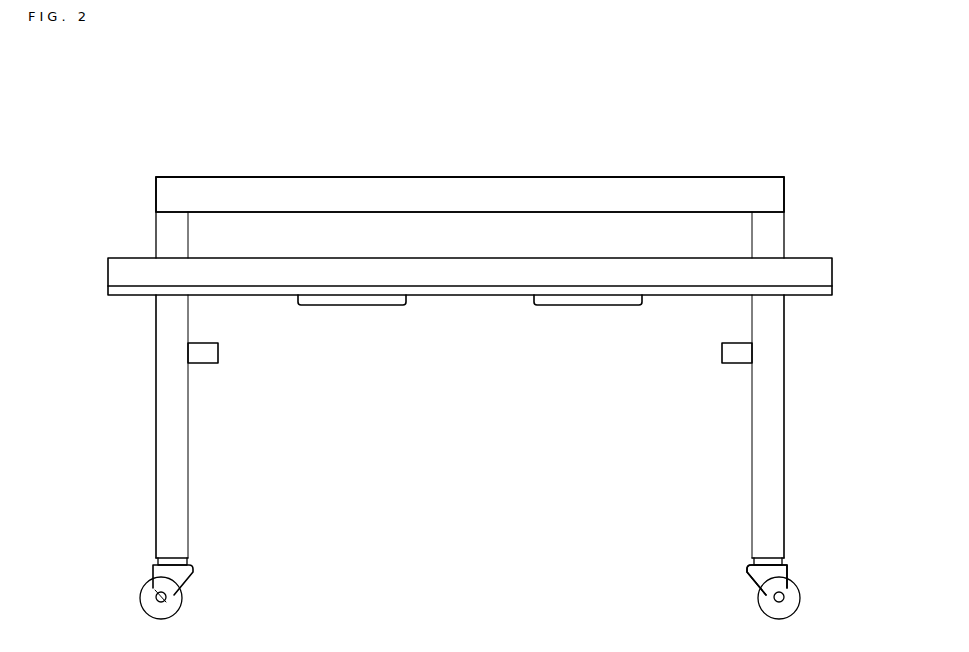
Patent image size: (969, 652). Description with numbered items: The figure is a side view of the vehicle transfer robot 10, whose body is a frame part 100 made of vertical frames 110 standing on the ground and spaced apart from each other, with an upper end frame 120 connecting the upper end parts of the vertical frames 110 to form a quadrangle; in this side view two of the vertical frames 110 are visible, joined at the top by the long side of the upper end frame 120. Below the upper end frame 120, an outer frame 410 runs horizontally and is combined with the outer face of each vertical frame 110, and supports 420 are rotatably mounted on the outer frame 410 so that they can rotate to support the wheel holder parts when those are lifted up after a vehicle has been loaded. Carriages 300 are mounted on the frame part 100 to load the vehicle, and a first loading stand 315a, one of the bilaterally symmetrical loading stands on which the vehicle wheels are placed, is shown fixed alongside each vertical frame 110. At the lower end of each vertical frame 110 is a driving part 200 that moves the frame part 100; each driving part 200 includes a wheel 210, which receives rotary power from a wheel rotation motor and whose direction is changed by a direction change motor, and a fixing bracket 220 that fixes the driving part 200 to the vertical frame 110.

The vehicle transfer robot 10 is at (119, 124).
The frame part 100 is at (150, 191).
The vertical frame 110 is at (156, 425).
The upper end frame 120 is at (490, 177).
The driving part 200 is at (143, 566).
The wheel 210 is at (800, 597).
The fixing bracket 220 is at (750, 566).
The carriage 300 is at (798, 563).
The first loading stand 315a is at (219, 352).
The outer frame 410 is at (832, 272).
The support 420 is at (352, 306).